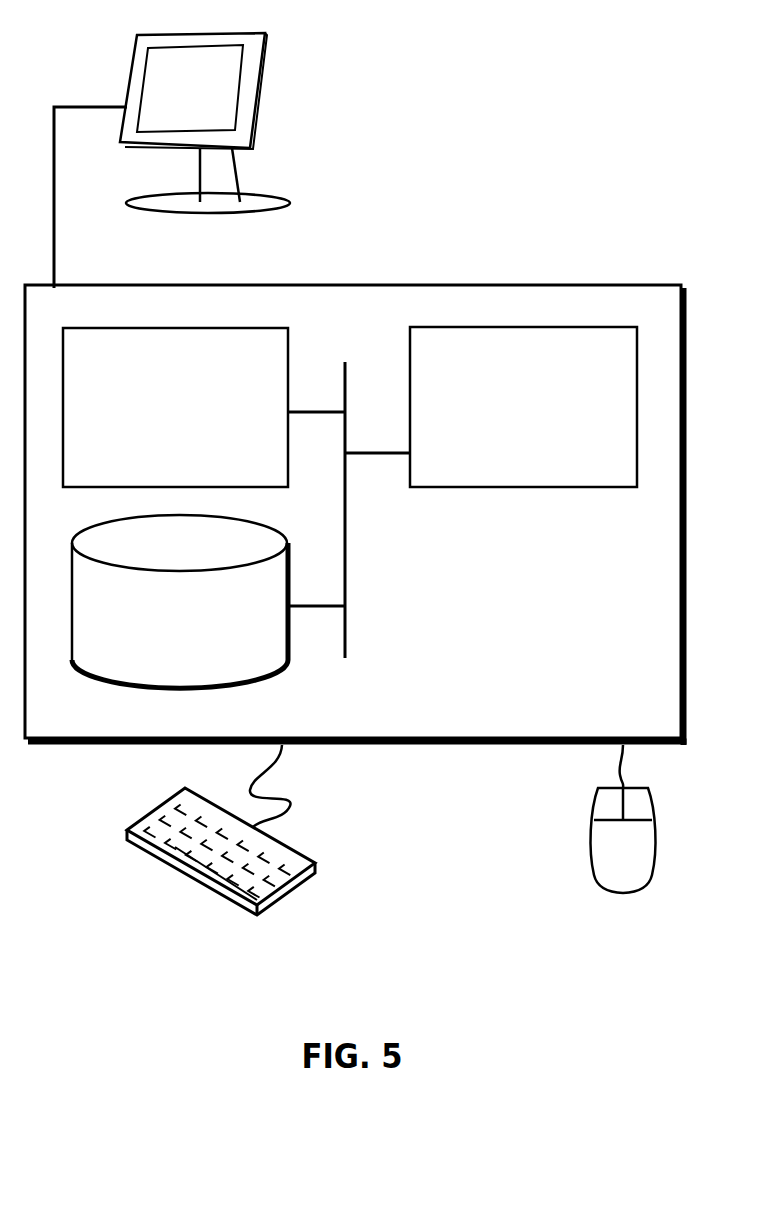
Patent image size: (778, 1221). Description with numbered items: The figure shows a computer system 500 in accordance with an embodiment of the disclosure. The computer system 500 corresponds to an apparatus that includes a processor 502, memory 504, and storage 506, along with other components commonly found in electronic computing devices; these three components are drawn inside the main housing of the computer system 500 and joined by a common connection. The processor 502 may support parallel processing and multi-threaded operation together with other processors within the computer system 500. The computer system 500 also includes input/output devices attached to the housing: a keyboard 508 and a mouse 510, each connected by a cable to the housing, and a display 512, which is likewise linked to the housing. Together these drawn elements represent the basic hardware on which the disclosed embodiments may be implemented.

The computer system 500 is at (399, 265).
The processor 502 is at (523, 407).
The memory 504 is at (175, 407).
The storage 506 is at (180, 601).
The keyboard 508 is at (147, 848).
The mouse 510 is at (623, 819).
The display 512 is at (172, 160).